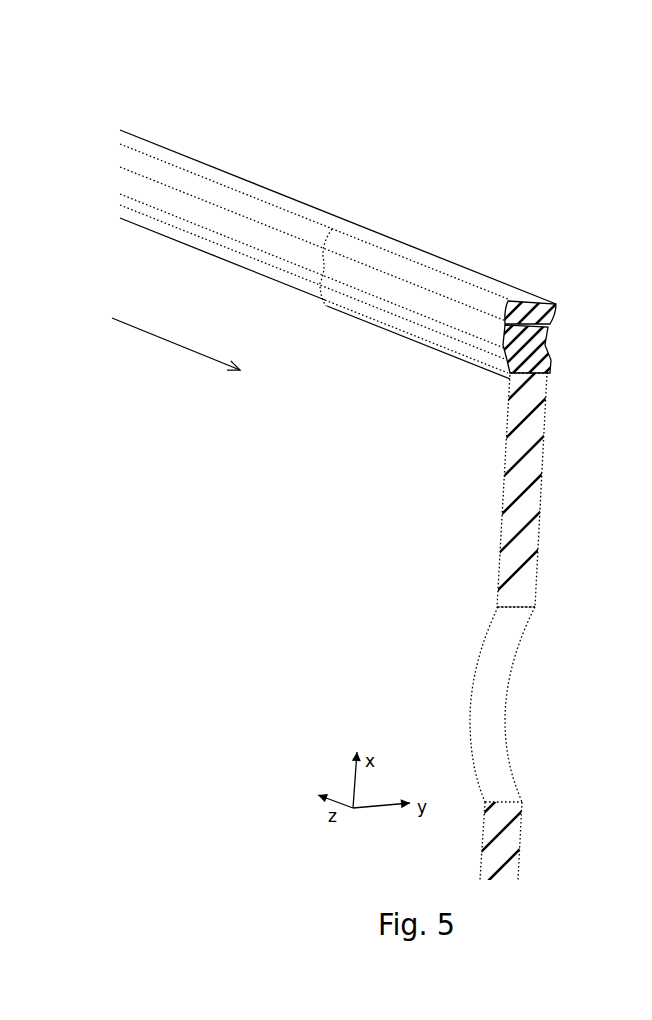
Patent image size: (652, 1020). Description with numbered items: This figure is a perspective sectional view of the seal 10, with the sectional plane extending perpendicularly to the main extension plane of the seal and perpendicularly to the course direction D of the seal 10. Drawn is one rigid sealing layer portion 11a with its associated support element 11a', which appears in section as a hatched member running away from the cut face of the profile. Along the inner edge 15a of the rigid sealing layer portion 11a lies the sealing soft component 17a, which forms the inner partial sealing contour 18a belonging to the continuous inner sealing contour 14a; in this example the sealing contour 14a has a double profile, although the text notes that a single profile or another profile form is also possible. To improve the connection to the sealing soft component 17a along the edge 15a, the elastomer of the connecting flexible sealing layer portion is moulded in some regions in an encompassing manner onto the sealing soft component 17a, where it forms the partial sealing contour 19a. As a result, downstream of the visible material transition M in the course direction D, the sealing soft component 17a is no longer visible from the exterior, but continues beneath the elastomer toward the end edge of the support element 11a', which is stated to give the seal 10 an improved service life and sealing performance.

The seal 10 is at (592, 235).
The rigid sealing layer portion 11a is at (541, 758).
The support element 11a' is at (542, 478).
The inner uninterrupted sealing contour 14a is at (210, 232).
The inner edge 15a is at (427, 345).
The sealing soft component 17a is at (248, 210).
The inner partial sealing contour 18a is at (159, 210).
The partial sealing contour 19a is at (460, 283).
The visible material transition M is at (347, 232).
The course direction D is at (183, 348).